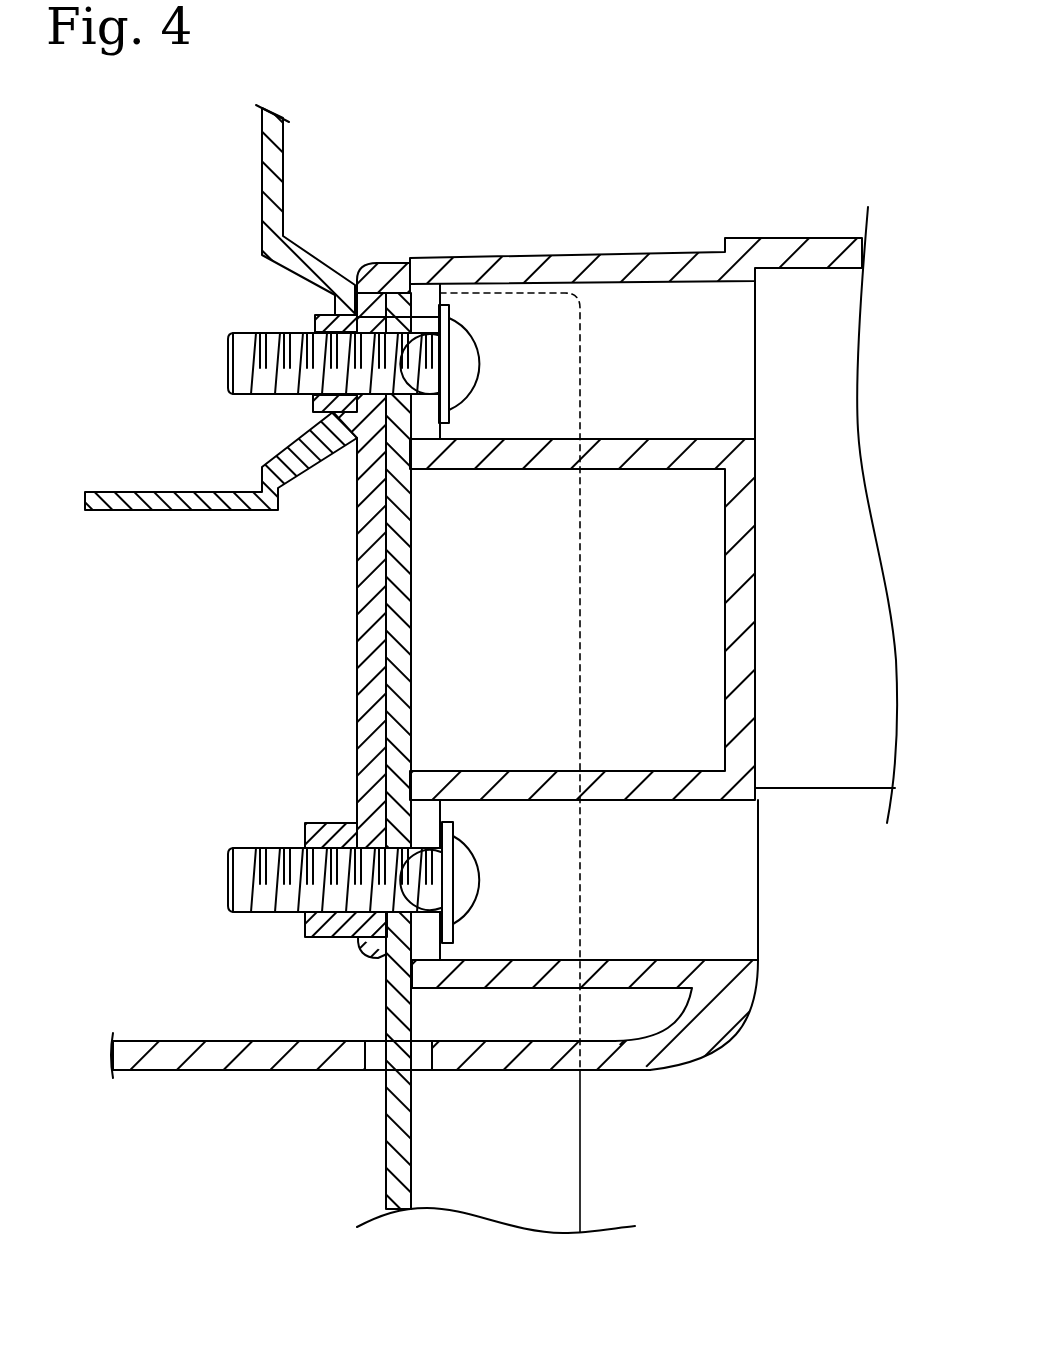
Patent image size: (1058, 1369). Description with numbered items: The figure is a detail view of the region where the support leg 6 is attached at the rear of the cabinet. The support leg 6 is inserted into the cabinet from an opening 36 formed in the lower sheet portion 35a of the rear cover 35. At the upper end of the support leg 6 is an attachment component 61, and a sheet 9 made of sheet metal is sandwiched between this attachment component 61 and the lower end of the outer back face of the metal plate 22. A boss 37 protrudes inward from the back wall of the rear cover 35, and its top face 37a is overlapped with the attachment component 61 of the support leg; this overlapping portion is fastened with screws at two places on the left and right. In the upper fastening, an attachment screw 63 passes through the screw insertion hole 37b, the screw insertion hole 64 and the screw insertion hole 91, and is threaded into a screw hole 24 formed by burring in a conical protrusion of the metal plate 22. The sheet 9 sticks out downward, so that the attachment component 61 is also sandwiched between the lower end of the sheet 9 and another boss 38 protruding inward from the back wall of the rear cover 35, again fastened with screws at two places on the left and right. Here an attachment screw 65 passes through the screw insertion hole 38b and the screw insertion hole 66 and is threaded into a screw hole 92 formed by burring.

The support leg 6 is at (388, 1163).
The sheet 9 is at (357, 598).
The metal plate 22 is at (284, 150).
The screw hole 24 is at (310, 353).
The rear cover 35 is at (843, 331).
The lower sheet portion 35a is at (158, 1071).
The opening 36 is at (375, 1062).
The boss 37 is at (604, 252).
The top face 37a is at (390, 266).
The screw insertion hole 37b is at (441, 347).
The boss 38 is at (540, 771).
The screw insertion hole 38b is at (444, 860).
The attachment component 61 is at (411, 582).
The attachment screw 63 is at (481, 362).
The screw insertion hole 64 is at (425, 392).
The attachment screw 65 is at (482, 878).
The screw insertion hole 66 is at (410, 901).
The screw insertion hole 91 is at (334, 313).
The screw hole 92 is at (340, 905).